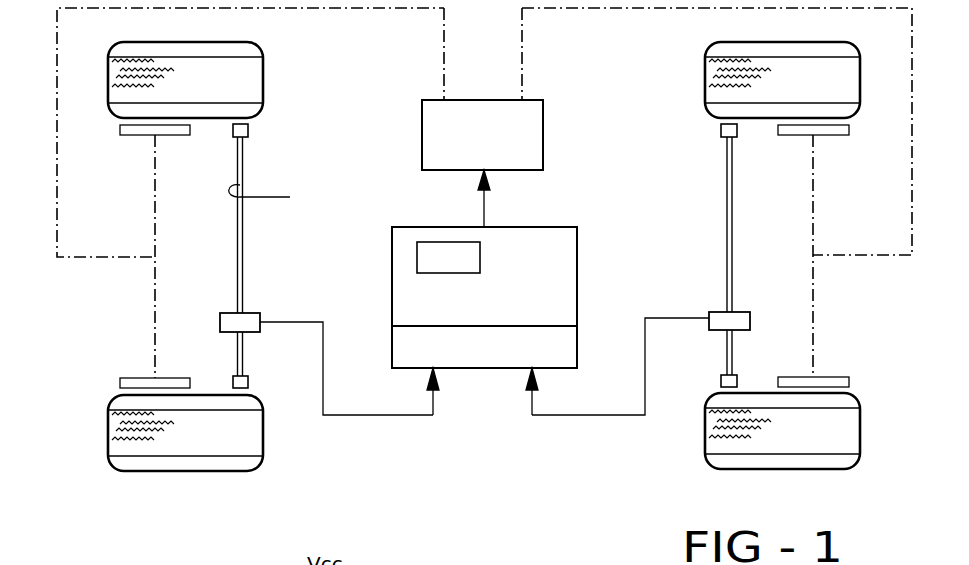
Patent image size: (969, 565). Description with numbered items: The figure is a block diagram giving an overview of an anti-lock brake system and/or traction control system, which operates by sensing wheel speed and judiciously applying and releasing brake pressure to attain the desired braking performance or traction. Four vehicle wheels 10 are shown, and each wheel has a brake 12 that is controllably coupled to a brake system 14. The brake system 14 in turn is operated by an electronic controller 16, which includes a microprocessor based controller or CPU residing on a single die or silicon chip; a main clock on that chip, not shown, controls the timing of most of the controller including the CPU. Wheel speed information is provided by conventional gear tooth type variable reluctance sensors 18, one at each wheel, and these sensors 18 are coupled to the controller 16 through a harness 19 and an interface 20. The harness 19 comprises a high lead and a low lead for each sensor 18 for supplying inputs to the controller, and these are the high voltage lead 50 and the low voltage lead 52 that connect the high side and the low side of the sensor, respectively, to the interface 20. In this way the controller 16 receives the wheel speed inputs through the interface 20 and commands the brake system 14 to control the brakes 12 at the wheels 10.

The vehicle wheels 10 is at (263, 88).
The brake 12 is at (132, 135).
The brake system 14 is at (484, 100).
The electronic controller 16 is at (550, 229).
The variable reluctance sensors 18 is at (233, 130).
The harness 19 is at (295, 320).
The interface 20 is at (577, 340).
The high voltage lead 50 is at (243, 153).
The low voltage lead 52 is at (274, 196).